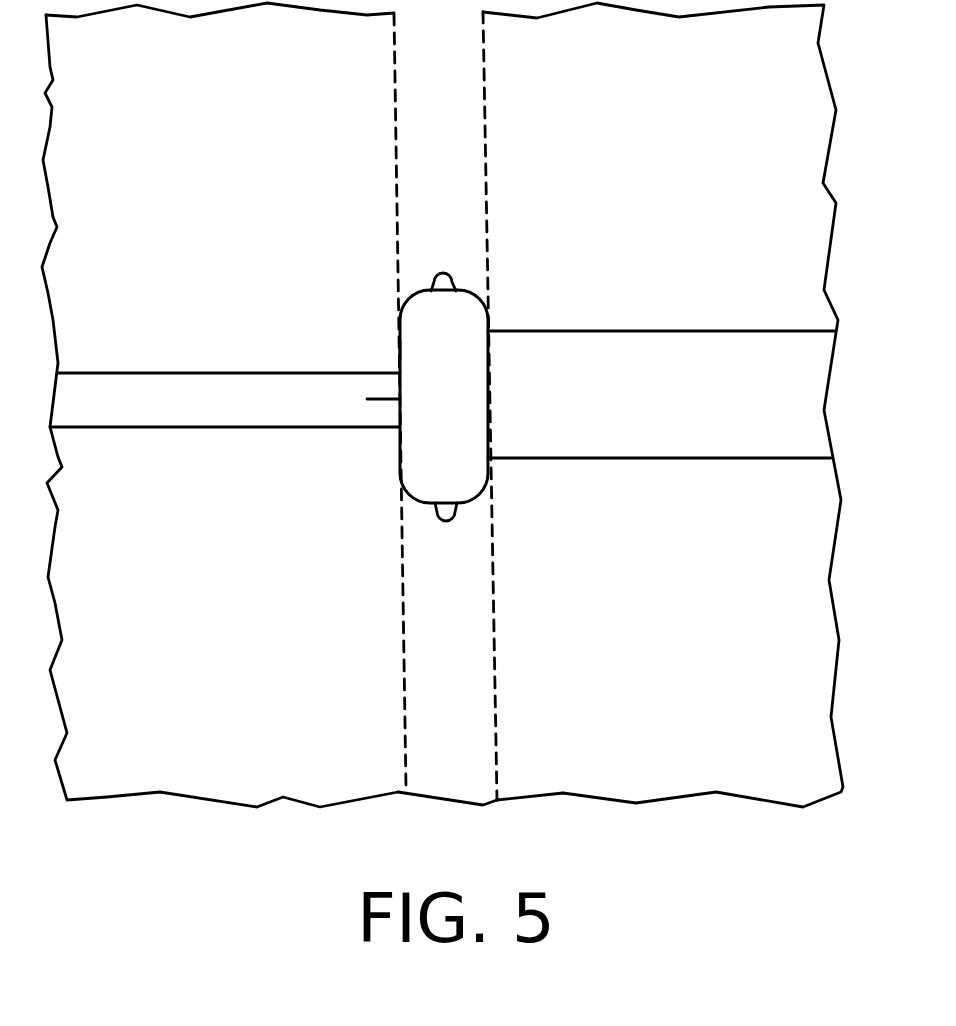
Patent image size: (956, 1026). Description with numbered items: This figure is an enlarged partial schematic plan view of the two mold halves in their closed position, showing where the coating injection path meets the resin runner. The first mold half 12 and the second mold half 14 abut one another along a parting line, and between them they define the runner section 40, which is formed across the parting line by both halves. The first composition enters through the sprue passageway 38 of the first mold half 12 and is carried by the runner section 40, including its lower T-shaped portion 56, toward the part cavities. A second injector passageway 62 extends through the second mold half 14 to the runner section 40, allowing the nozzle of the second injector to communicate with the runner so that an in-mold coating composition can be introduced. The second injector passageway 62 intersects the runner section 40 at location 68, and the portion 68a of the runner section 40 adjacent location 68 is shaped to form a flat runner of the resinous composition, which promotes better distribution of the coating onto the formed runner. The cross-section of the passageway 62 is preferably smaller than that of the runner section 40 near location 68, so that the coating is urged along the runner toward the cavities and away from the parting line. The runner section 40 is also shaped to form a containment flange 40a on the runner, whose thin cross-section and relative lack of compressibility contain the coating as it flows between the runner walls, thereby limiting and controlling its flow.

The first mold half 12 is at (736, 765).
The second mold half 14 is at (159, 772).
The sprue passageway 38 is at (644, 320).
The runner section 40 is at (441, 419).
The containment flange 40a is at (445, 273).
The lower T-shaped portion 56 is at (447, 125).
The second injector passageway 62 is at (243, 403).
The location 68 is at (367, 399).
The portion of runner section 68a is at (398, 351).